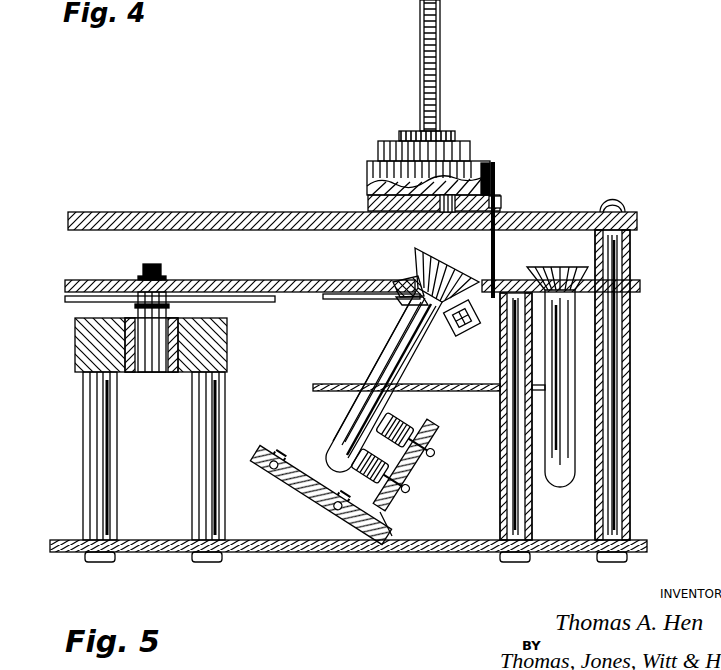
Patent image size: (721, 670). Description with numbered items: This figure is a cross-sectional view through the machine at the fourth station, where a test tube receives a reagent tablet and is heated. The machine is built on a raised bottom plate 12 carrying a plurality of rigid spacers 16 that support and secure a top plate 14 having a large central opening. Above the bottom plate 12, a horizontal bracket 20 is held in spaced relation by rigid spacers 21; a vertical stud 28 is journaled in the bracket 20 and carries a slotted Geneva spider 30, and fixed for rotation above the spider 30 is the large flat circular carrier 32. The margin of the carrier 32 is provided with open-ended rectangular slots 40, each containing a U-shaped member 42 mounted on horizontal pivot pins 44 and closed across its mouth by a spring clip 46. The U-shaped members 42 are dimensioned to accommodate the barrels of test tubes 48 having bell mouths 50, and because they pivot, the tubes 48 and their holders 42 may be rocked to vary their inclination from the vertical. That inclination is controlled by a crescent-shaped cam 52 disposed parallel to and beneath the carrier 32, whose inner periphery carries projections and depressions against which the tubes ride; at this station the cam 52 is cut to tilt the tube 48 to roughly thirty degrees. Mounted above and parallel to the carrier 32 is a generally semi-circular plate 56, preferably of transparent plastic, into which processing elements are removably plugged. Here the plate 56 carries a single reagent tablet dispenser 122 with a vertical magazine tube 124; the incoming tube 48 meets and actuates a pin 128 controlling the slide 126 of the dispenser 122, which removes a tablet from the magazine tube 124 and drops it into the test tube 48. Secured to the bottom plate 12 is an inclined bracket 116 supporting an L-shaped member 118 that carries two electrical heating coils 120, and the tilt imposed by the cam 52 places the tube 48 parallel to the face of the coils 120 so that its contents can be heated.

The bottom plate 12 is at (160, 542).
The top plate 14 is at (645, 290).
The rigid spacers 16 is at (632, 390).
The horizontal bracket 20 is at (78, 358).
The rigid spacers 21 is at (196, 468).
The vertical stud 28 is at (152, 374).
The Geneva spider 30 is at (262, 302).
The carrier 32 is at (320, 280).
The rectangular slots 40 is at (395, 281).
The U-shaped member 42 is at (400, 302).
The horizontal pivot pins 44 is at (400, 327).
The spring clip 46 is at (470, 332).
The test tube 48 is at (372, 376).
The bell mouth 50 is at (455, 256).
The cam 52 is at (480, 392).
The semi-circular plate 56 is at (266, 214).
The inclined bracket 116 is at (387, 532).
The L-shaped member 118 is at (282, 455).
The electrical heating coils 120 is at (398, 425).
The single reagent tablet dispenser 122 is at (488, 146).
The vertical magazine tube 124 is at (420, 88).
The slide 126 is at (505, 203).
The pin 128 is at (497, 252).